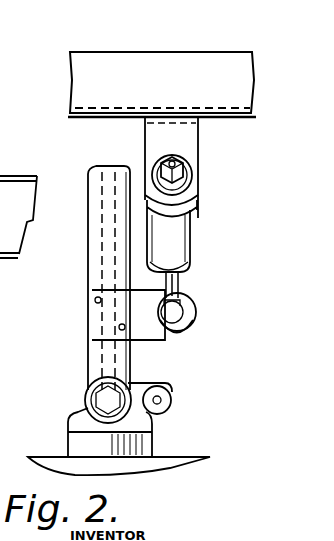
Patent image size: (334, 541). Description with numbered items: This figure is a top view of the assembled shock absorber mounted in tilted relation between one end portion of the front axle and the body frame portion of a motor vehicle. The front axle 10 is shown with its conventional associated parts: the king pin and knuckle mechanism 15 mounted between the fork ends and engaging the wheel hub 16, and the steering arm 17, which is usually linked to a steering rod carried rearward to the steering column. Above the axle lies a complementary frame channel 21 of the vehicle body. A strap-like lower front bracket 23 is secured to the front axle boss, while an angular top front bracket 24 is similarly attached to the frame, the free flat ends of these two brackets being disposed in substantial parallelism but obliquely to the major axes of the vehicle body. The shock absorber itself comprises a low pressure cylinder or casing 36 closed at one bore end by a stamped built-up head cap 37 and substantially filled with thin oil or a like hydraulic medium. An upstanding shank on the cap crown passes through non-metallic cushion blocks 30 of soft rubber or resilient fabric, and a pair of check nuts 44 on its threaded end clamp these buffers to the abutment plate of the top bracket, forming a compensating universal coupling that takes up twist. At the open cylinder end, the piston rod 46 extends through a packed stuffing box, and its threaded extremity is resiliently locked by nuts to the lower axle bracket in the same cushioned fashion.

The front axle 10 is at (92, 270).
The king pin and knuckle mechanism 15 is at (88, 397).
The wheel hub 16 is at (76, 440).
The steering arm 17 is at (172, 401).
The frame channel 21 is at (120, 58).
The lower front bracket 23 is at (160, 340).
The angular top front bracket 24 is at (188, 152).
The buffer or cushion block 30 is at (196, 316).
The low pressure cylinder or casing 36 is at (194, 240).
The head cap 37 is at (198, 212).
The check nuts 44 is at (187, 171).
The piston rod 46 is at (183, 296).